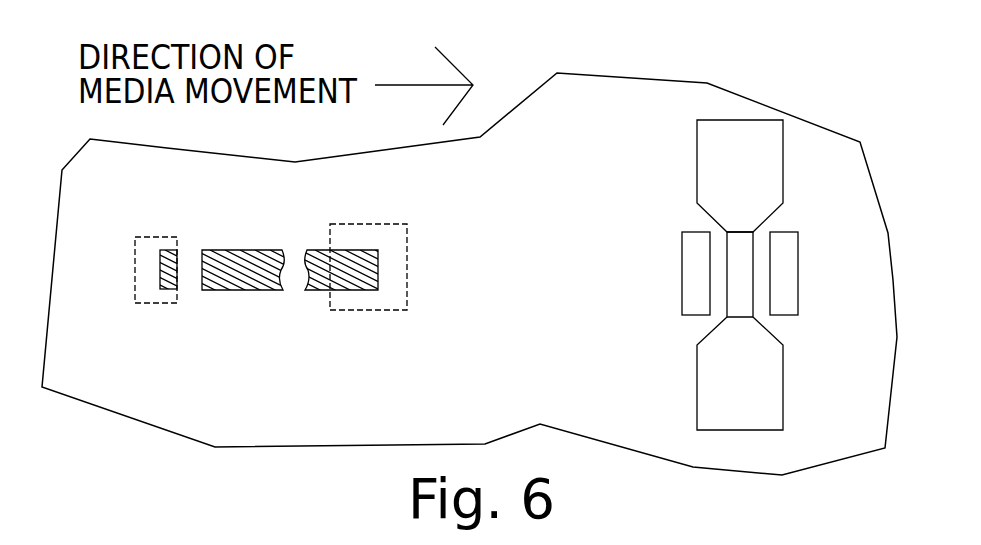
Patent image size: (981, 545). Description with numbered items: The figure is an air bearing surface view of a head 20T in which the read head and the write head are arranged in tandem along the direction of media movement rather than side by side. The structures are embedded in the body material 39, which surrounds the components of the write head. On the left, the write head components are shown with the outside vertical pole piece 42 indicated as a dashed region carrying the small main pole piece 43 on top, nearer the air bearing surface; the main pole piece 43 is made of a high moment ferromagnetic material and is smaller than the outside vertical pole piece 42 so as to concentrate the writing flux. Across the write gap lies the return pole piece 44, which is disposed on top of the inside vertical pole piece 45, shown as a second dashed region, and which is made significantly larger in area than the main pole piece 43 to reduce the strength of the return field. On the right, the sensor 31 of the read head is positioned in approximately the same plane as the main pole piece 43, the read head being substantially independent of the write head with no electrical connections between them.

The media tape segment 20T is at (828, 73).
The body material 39 is at (532, 202).
The sensor 31 is at (743, 298).
The outside vertical pole piece 42 is at (145, 243).
The main pole piece 43 is at (163, 285).
The return pole piece 44 is at (252, 285).
The inside vertical pole piece 45 is at (392, 298).